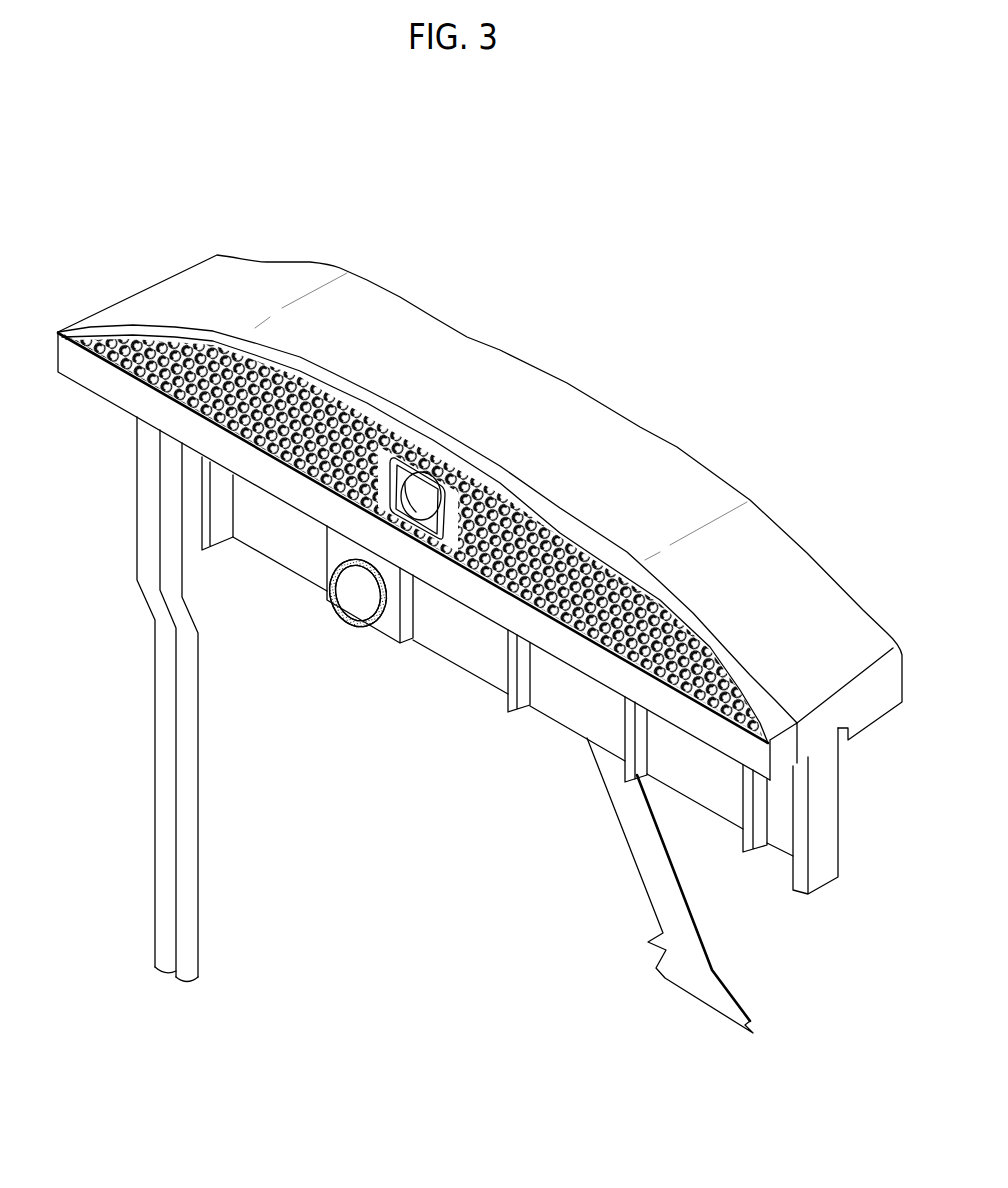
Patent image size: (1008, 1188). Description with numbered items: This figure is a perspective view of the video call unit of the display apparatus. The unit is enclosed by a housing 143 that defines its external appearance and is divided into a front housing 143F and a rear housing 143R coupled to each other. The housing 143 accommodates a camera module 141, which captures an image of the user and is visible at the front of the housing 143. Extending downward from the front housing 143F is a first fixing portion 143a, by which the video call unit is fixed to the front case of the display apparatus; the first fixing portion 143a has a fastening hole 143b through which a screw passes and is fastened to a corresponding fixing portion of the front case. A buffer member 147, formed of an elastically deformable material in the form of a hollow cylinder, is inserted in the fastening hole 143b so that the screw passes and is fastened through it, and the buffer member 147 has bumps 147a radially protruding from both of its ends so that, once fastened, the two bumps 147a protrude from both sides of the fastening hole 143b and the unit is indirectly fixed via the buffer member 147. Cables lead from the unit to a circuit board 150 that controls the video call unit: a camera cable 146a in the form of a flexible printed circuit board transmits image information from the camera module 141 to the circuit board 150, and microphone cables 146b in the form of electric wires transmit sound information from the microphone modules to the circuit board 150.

The circuit board 150 is at (578, 202).
The camera module 141 is at (400, 477).
The housing 143 is at (110, 190).
The front housing 143F is at (77, 327).
The rear housing 143R is at (170, 288).
The first fixing portion 143a is at (460, 650).
The fastening hole 143b is at (350, 588).
The buffer member 147 is at (359, 638).
The bumps 147a is at (382, 627).
The camera cable 146a is at (657, 903).
The microphone cables 146b is at (188, 713).